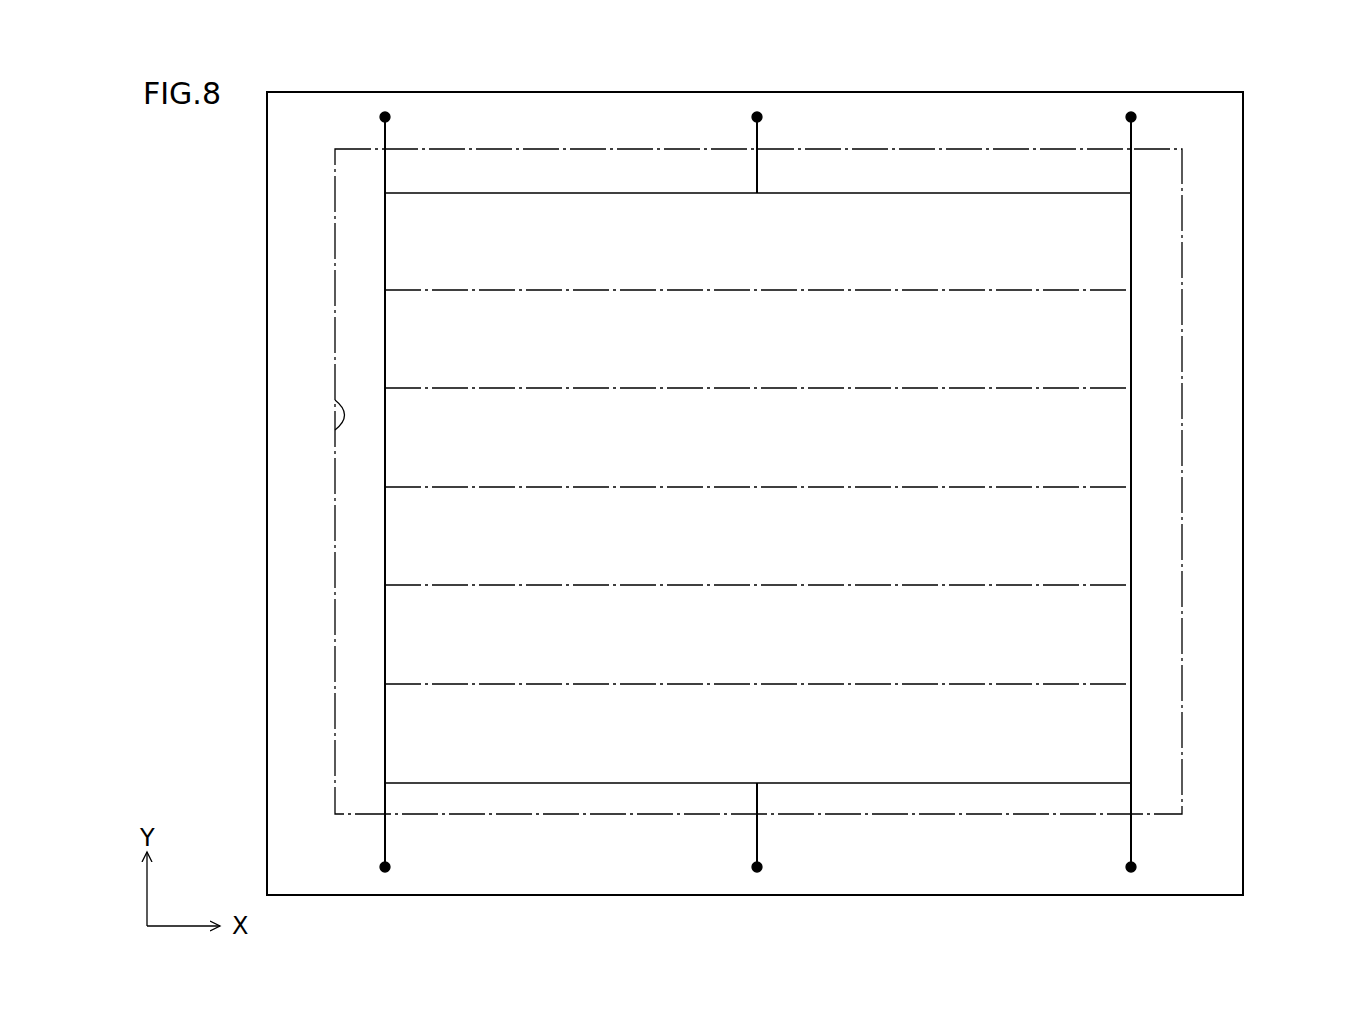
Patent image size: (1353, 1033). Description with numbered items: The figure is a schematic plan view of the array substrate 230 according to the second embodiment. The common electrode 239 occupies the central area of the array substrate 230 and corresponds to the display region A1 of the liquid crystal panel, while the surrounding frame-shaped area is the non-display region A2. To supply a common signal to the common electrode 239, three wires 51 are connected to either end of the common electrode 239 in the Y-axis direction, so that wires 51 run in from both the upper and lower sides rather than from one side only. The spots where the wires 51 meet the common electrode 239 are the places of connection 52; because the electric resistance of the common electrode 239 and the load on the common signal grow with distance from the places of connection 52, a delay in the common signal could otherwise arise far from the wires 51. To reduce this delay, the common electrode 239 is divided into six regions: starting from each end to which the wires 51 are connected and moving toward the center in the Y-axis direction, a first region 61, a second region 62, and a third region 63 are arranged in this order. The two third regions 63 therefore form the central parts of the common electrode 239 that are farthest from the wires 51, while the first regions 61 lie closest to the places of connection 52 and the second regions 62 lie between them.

The array substrate 230 is at (1193, 73).
The common electrode 239 is at (552, 193).
The wire 51 is at (385, 163).
The place of connection 52 is at (385, 193).
The first region 61 is at (1101, 234).
The second region 62 is at (1101, 328).
The third region 63 is at (1101, 449).
The display region A1 is at (335, 400).
The non-display region A2 is at (1178, 850).